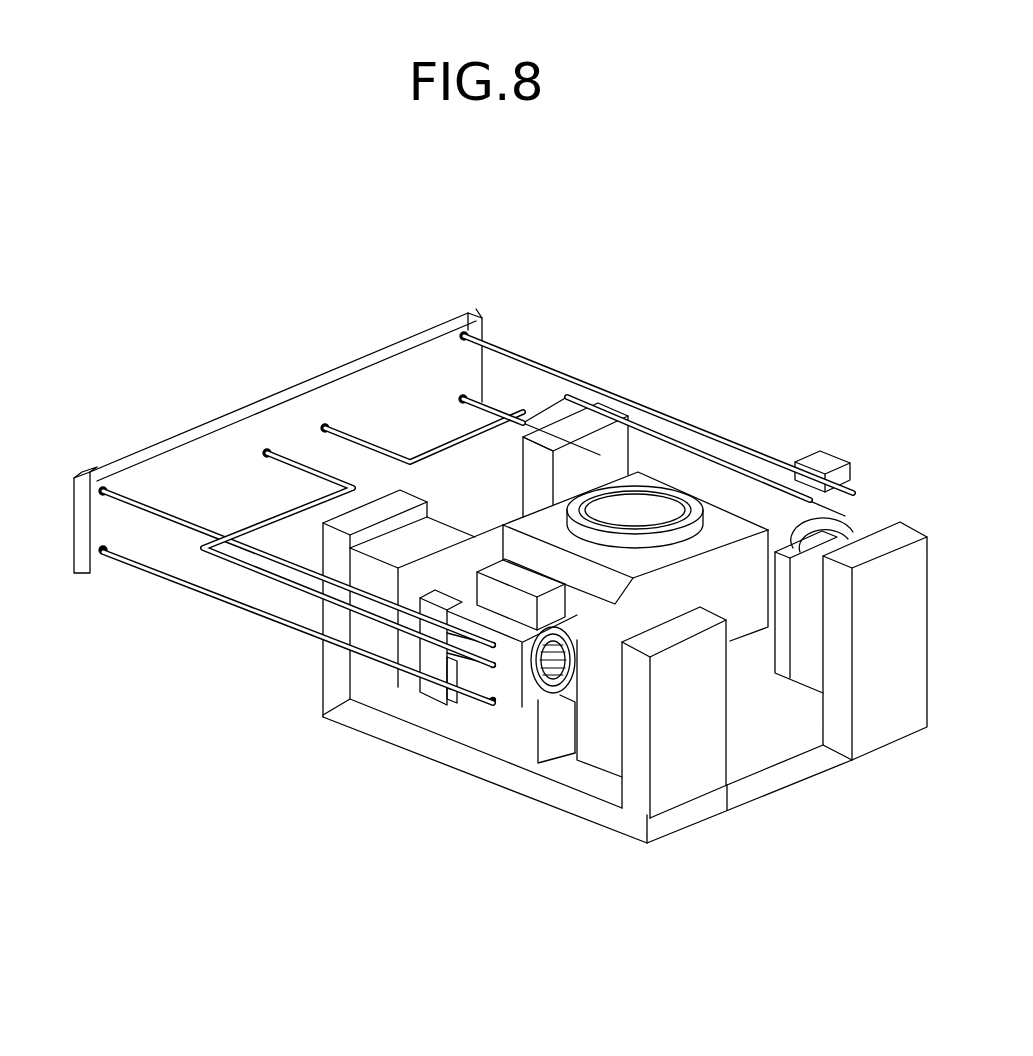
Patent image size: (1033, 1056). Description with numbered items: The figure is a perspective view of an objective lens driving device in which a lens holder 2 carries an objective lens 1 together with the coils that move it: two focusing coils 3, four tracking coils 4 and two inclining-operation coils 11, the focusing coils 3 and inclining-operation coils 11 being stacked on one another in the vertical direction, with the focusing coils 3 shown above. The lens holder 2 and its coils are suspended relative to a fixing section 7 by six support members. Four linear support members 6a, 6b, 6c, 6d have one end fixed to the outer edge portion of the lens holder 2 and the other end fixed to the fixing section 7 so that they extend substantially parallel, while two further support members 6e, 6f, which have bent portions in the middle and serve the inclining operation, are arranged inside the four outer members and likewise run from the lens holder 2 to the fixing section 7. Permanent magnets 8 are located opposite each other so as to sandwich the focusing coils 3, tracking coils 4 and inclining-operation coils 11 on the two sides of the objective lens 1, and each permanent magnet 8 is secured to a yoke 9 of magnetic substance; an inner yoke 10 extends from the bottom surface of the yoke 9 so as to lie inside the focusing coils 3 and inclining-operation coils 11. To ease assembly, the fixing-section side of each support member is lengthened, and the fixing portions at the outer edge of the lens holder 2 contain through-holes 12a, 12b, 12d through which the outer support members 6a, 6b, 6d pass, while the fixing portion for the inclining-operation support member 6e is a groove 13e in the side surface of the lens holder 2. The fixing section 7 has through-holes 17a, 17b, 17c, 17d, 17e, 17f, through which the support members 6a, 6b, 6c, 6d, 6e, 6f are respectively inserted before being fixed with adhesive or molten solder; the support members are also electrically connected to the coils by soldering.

The objective lens 1 is at (653, 513).
The lens holder 2 is at (723, 527).
The focusing coils 3 is at (543, 712).
The tracking coils 4 is at (853, 488).
The support member 6a is at (155, 568).
The support member 6b is at (210, 582).
The support member 6c is at (510, 412).
The support member 6d is at (605, 388).
The support member 6e is at (268, 578).
The support member 6f is at (410, 452).
The fixing section 7 is at (360, 398).
The permanent magnets 8 is at (635, 457).
The yoke 9 is at (870, 680).
The inner yoke 10 is at (767, 473).
The inclining-operation coils 11 is at (566, 705).
The through-hole 12a is at (420, 665).
The through-hole 12b is at (478, 725).
The through-hole 12d is at (820, 467).
The groove 13e is at (447, 703).
The through-hole 17a is at (103, 487).
The through-hole 17b is at (105, 555).
The through-hole 17c is at (470, 398).
The through-hole 17d is at (463, 330).
The through-hole 17e is at (267, 448).
The through-hole 17f is at (327, 423).